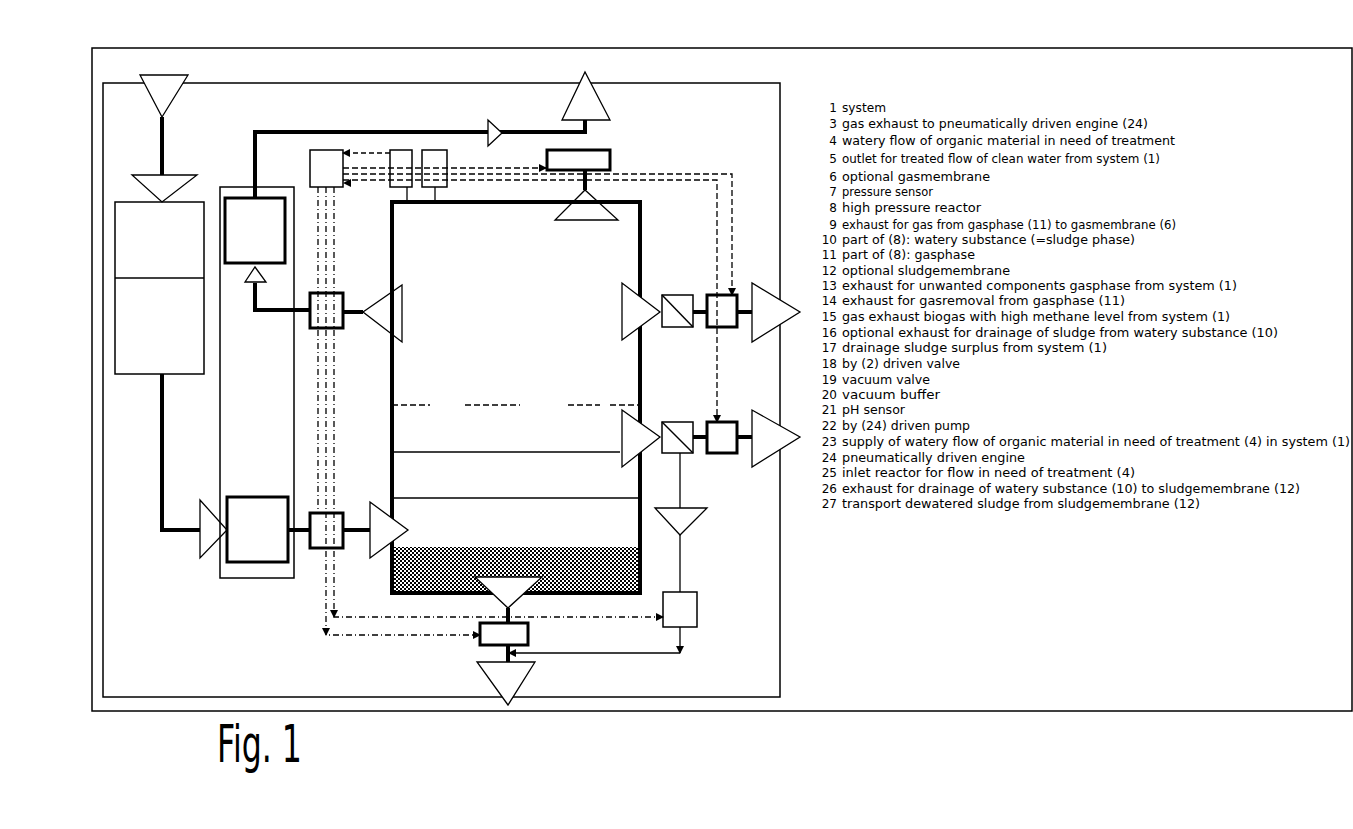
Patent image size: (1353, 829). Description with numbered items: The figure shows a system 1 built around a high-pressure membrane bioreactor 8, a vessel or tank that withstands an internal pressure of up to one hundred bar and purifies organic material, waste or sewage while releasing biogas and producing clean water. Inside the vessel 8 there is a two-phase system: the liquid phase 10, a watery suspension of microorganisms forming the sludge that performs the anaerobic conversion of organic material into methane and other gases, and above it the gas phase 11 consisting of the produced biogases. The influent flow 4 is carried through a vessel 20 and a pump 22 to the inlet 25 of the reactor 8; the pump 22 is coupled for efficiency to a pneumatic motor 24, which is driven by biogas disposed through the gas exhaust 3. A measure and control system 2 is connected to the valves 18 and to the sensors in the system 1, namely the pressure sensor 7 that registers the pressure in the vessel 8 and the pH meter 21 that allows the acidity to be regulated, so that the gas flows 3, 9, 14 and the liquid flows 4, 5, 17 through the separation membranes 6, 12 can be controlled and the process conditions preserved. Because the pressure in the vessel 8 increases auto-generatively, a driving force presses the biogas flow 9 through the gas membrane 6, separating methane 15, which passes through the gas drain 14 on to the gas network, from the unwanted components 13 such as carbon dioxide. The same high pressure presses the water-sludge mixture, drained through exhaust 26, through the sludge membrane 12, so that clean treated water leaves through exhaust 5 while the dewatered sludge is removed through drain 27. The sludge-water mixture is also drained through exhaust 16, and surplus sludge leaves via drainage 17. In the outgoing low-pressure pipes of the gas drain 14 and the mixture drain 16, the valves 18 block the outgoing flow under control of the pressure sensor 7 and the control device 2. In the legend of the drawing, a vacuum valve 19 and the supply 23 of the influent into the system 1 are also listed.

The system 1 is at (441, 390).
The measure and control system 2 is at (521, 393).
The gas exhaust 3 is at (323, 304).
The influent flow 4 is at (213, 529).
The clean water exhaust 5 is at (768, 438).
The gas membrane 6 is at (684, 304).
The pressure sensor 7 is at (401, 176).
The high-pressure membrane bioreactor 8 is at (516, 406).
The gas flow 9 is at (641, 311).
The liquid phase 10 is at (516, 409).
The gas phase 11 is at (516, 304).
The sludge membrane 12 is at (684, 430).
The unwanted components exhaust 13 is at (768, 312).
The gas drain 14 is at (586, 206).
The methane exhaust 15 is at (432, 135).
The water-sludge mixture drain 16 is at (508, 600).
The sludge drainage flow 17 is at (506, 675).
The valves 18 is at (523, 397).
The vacuum valve 19 is at (164, 138).
The vessel 20 is at (159, 288).
The pH meter 21 is at (434, 176).
The pump 22 is at (257, 529).
The supply of watery flow of organic material in need of treatment in system 23 is at (181, 452).
The pneumatic motor 24 is at (257, 382).
The reactor inlet 25 is at (348, 530).
The water-sludge mixture exhaust 26 is at (641, 438).
The dewatered sludge drain 27 is at (608, 553).